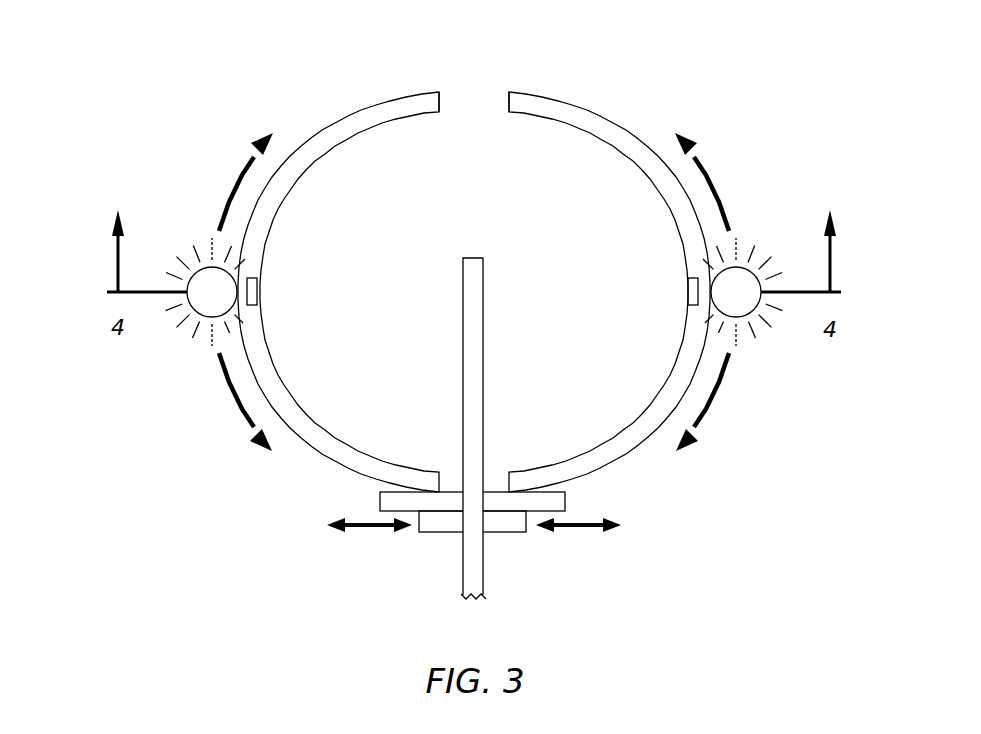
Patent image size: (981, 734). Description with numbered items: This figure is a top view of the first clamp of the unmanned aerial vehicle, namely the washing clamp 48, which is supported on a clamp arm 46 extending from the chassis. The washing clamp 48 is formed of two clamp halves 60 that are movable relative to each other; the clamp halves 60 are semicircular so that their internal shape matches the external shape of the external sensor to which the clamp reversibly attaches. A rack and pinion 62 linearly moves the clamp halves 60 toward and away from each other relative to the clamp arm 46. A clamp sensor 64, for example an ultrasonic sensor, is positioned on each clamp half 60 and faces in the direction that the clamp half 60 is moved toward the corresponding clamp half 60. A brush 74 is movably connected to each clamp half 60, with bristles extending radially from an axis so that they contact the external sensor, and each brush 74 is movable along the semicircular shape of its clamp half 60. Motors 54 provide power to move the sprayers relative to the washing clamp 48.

The clamp arm 46 is at (484, 566).
The washing clamp 48 is at (562, 94).
The motor 54 is at (196, 250).
The clamp half 60 is at (508, 90).
The rack and pinion 62 is at (433, 534).
The clamp sensor 64 is at (259, 286).
The brush 74 is at (193, 332).